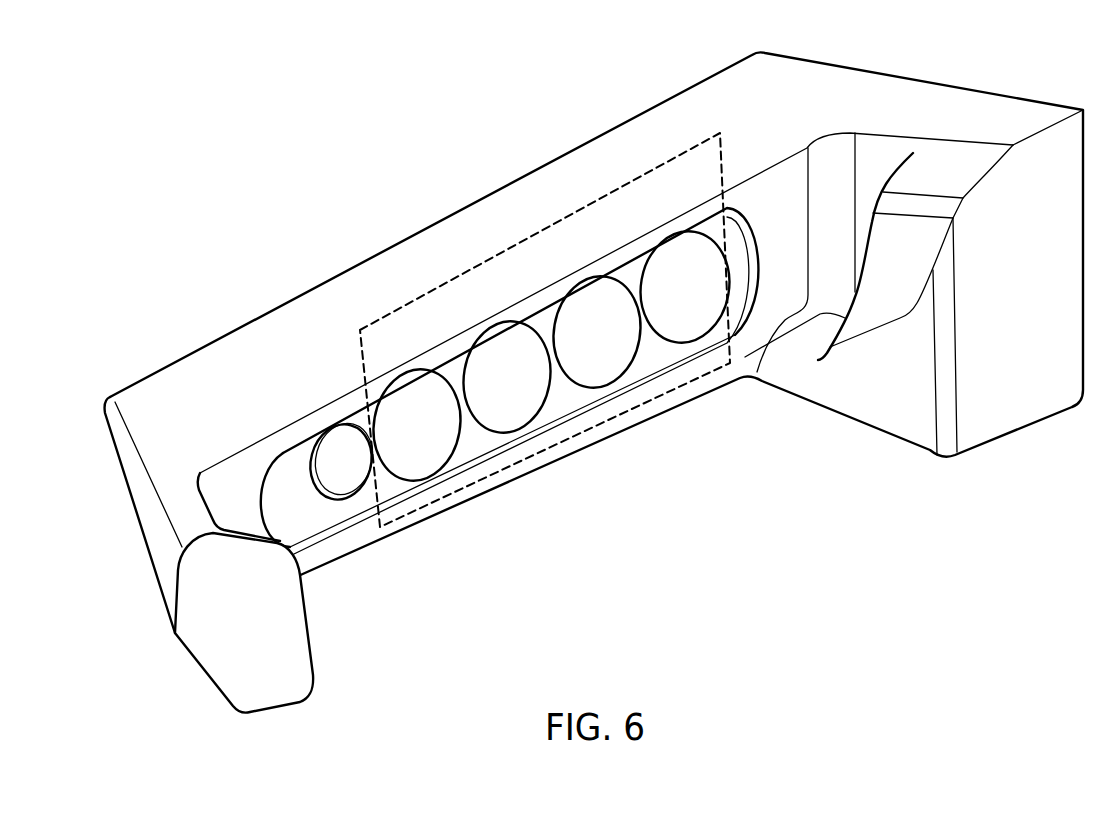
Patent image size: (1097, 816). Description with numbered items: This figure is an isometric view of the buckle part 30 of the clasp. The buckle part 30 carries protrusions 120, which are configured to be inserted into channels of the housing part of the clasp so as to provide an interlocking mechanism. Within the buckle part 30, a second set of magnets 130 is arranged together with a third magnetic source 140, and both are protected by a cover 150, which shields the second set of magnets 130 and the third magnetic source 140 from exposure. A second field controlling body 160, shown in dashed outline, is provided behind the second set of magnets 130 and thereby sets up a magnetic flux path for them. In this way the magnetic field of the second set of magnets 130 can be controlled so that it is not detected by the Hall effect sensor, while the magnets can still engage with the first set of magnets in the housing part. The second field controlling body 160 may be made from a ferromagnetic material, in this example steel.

The buckle part 30 is at (552, 163).
The protrusions 120 is at (280, 602).
The second set of magnets 130 is at (508, 353).
The third magnetic source 140 is at (337, 453).
The cover 150 is at (617, 270).
The second field controlling body 160 is at (398, 305).